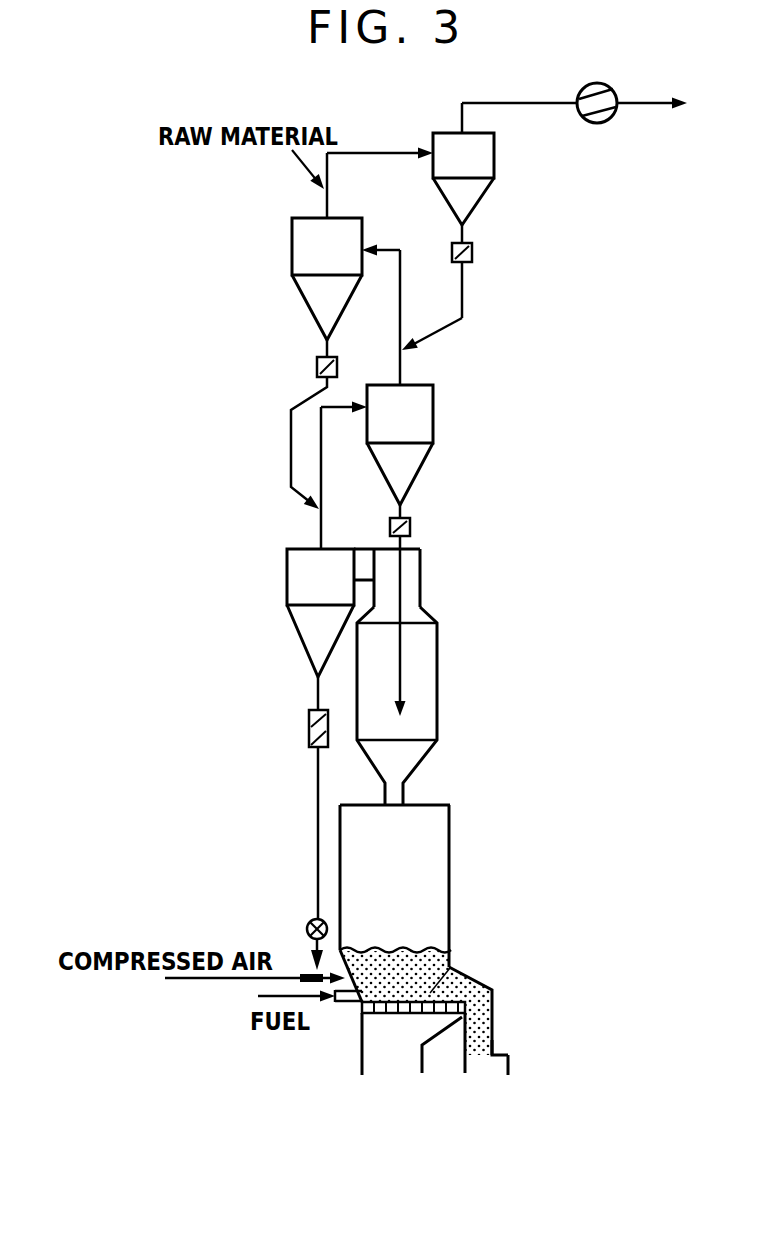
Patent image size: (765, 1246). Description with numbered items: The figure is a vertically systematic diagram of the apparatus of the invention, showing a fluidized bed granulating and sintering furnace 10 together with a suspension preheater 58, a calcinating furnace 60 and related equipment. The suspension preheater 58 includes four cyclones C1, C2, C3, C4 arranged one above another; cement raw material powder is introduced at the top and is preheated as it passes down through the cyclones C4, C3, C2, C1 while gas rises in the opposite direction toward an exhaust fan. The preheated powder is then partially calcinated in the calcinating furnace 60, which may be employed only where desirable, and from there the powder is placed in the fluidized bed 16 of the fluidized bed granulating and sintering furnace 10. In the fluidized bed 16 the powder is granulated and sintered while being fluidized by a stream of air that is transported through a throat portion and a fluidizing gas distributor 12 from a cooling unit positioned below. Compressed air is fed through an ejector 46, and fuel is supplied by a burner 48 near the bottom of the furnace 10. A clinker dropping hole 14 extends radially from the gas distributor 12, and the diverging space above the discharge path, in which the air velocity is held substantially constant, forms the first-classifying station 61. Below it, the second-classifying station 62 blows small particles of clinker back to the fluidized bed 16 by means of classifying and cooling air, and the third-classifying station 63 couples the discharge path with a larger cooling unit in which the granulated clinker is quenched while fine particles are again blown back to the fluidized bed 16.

The fluidized bed granulating and sintering furnace 10 is at (449, 843).
The fluidizing gas distributor 12 is at (395, 1018).
The clinker dropping hole 14 is at (478, 1018).
The fluidized bed 16 is at (412, 950).
The ejector 46 is at (300, 985).
The burner 48 is at (350, 1003).
The suspension preheater 58 is at (292, 366).
The calcinating furnace 60 is at (437, 690).
The first-classifying station 61 is at (458, 983).
The second-classifying station 62 is at (478, 1048).
The third-classifying station 63 is at (508, 1065).
The cyclone C1 is at (287, 580).
The cyclone C2 is at (433, 418).
The cyclone C3 is at (292, 252).
The cyclone C4 is at (494, 153).